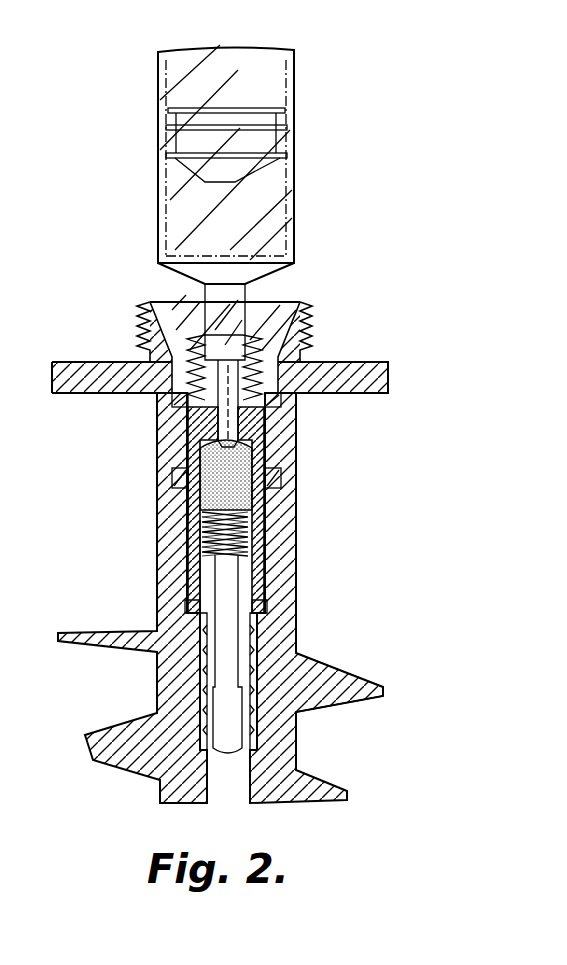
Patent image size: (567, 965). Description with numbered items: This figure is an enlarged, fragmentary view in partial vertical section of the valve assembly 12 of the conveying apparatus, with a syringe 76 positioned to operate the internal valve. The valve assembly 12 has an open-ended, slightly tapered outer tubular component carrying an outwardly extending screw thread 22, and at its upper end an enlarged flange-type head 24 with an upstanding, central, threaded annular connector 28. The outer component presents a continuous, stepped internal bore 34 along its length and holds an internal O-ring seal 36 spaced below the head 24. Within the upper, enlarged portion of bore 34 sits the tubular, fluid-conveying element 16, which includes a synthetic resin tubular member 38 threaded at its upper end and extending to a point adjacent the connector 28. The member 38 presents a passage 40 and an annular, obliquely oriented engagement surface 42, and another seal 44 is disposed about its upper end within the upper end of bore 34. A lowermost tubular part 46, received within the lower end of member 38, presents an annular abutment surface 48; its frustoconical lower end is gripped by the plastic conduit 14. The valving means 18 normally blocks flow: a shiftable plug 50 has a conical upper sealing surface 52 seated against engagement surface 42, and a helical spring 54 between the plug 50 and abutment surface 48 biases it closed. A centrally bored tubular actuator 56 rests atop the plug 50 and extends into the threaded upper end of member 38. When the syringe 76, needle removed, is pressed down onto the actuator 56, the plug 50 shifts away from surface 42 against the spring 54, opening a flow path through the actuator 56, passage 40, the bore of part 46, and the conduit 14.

The valve assembly 12 is at (72, 591).
The conduit 14 is at (258, 761).
The tubular element 16 is at (278, 553).
The valving means 18 is at (275, 313).
The screw thread 22 is at (383, 686).
The flange-type head 24 is at (356, 364).
The threaded annular connector 28 is at (137, 320).
The internal bore 34 is at (262, 606).
The internal O-ring seal 36 is at (283, 481).
The tubular member 38 is at (264, 498).
The passage 40 is at (200, 524).
The engagement surface 42 is at (265, 440).
The seal 44 is at (292, 402).
The lowermost tubular part 46 is at (213, 666).
The annular abutment surface 48 is at (196, 545).
The shiftable plug 50 is at (188, 495).
The conical upper sealing surface 52 is at (180, 472).
The helical spring 54 is at (284, 520).
The tubular actuator 56 is at (192, 408).
The syringe 76 is at (294, 108).